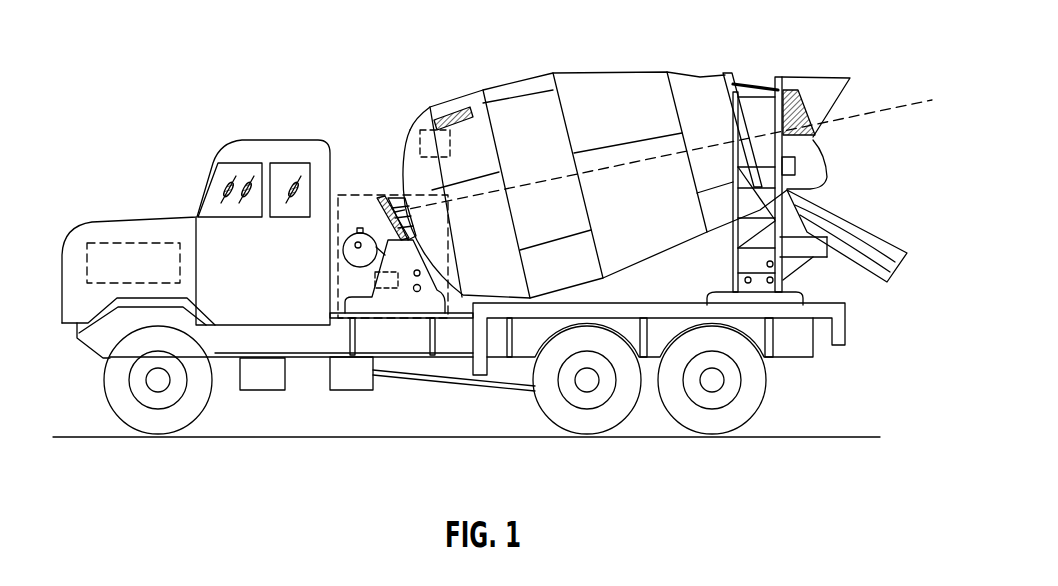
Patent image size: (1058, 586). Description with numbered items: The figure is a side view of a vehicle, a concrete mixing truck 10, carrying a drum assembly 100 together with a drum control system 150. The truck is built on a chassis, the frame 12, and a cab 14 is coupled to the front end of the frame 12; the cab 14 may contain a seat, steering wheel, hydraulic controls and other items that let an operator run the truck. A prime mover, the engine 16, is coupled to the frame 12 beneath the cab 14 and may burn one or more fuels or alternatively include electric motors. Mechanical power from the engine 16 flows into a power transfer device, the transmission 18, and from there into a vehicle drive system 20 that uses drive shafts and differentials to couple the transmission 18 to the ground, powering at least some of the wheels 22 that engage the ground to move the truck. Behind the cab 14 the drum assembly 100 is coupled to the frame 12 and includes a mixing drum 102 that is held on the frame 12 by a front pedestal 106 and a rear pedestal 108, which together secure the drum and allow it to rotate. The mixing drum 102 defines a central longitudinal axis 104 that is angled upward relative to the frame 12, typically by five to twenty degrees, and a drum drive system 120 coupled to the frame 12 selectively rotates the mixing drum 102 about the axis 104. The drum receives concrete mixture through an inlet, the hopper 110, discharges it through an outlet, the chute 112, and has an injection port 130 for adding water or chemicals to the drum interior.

The concrete mixing truck 10 is at (163, 110).
The frame 12 is at (395, 345).
The cab 14 is at (173, 221).
The engine 16 is at (100, 248).
The transmission 18 is at (357, 386).
The vehicle drive system 20 is at (525, 393).
The wheels 22 is at (113, 398).
The drum assembly 100 is at (531, 65).
The mixing drum 102 is at (637, 83).
The axis 104 is at (885, 110).
The front pedestal 106 is at (430, 253).
The rear pedestal 108 is at (737, 290).
The hopper 110 is at (823, 80).
The chute 112 is at (887, 237).
The drum drive system 120 is at (375, 195).
The injection port 130 is at (428, 126).
The drum control system 150 is at (377, 283).